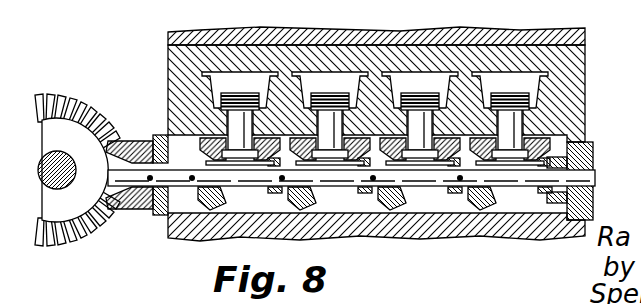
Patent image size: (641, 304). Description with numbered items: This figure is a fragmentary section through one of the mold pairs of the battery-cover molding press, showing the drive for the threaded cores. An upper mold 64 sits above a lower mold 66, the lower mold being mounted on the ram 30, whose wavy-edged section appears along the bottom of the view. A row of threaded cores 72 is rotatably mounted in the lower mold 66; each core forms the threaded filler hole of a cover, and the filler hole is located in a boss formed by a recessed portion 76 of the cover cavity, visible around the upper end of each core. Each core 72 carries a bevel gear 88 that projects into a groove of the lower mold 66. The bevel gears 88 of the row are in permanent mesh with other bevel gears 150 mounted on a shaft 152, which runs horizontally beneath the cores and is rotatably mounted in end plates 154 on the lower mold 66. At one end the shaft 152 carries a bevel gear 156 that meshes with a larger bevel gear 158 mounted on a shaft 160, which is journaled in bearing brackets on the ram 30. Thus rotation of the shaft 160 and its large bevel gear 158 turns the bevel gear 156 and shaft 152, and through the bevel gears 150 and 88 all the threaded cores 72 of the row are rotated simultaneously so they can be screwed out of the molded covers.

The ram 30 is at (545, 236).
The upper mold 64 is at (287, 47).
The lower mold 66 is at (585, 90).
The core 72 is at (232, 96).
The recessed portion 76 is at (263, 107).
The bevel gear 88 is at (268, 150).
The bevel gear 150 is at (206, 150).
The shaft 152 is at (250, 177).
The end plate 154 is at (157, 135).
The bevel gear 156 is at (147, 137).
The bevel gear 158 is at (72, 73).
The shaft 160 is at (56, 184).